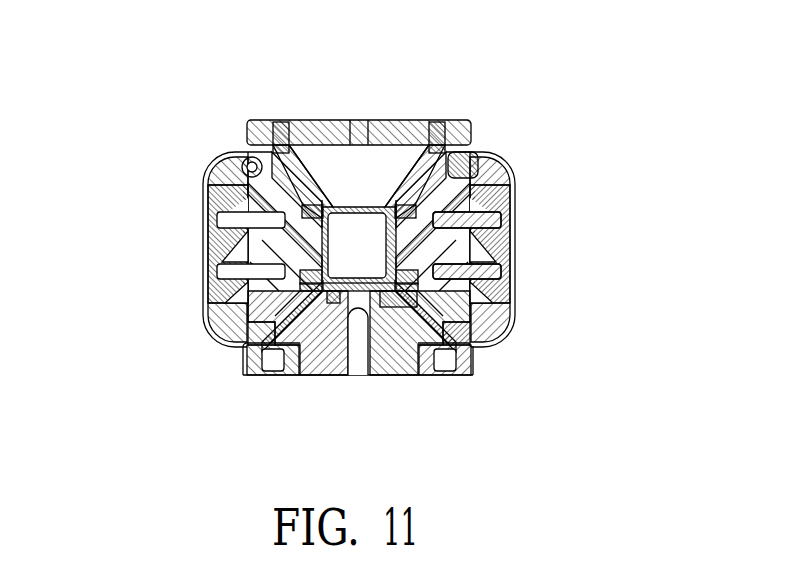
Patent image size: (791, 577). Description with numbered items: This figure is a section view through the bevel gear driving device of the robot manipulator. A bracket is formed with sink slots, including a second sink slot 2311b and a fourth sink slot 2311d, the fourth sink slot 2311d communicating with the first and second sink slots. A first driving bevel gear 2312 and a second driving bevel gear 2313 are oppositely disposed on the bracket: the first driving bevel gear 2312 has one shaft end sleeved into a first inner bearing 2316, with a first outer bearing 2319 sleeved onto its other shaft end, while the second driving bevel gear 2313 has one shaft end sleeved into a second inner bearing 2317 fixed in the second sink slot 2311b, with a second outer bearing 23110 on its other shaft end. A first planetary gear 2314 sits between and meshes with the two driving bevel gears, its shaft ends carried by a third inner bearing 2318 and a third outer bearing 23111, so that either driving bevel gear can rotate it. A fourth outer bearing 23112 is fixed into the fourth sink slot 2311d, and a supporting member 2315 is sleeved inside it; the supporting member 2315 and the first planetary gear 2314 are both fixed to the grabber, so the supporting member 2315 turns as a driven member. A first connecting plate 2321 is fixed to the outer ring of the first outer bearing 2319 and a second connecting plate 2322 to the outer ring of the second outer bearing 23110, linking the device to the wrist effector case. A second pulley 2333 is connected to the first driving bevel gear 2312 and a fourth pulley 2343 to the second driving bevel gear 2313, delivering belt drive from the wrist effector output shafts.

The second sink slot 2311b is at (300, 192).
The fourth sink slot 2311d is at (350, 165).
The first driving bevel gear 2312 is at (458, 303).
The second driving bevel gear 2313 is at (287, 305).
The first planetary gear 2314 is at (412, 362).
The supporting member 2315 is at (417, 121).
The first inner bearing 2316 is at (413, 209).
The second inner bearing 2317 is at (310, 216).
The third inner bearing 2318 is at (336, 296).
The first outer bearing 2319 is at (468, 167).
The second outer bearing 23110 is at (262, 332).
The third outer bearing 23111 is at (288, 348).
The fourth outer bearing 23112 is at (440, 131).
The first connecting plate 2321 is at (508, 170).
The second connecting plate 2322 is at (220, 165).
The second pulley 2333 is at (492, 247).
The fourth pulley 2343 is at (237, 245).